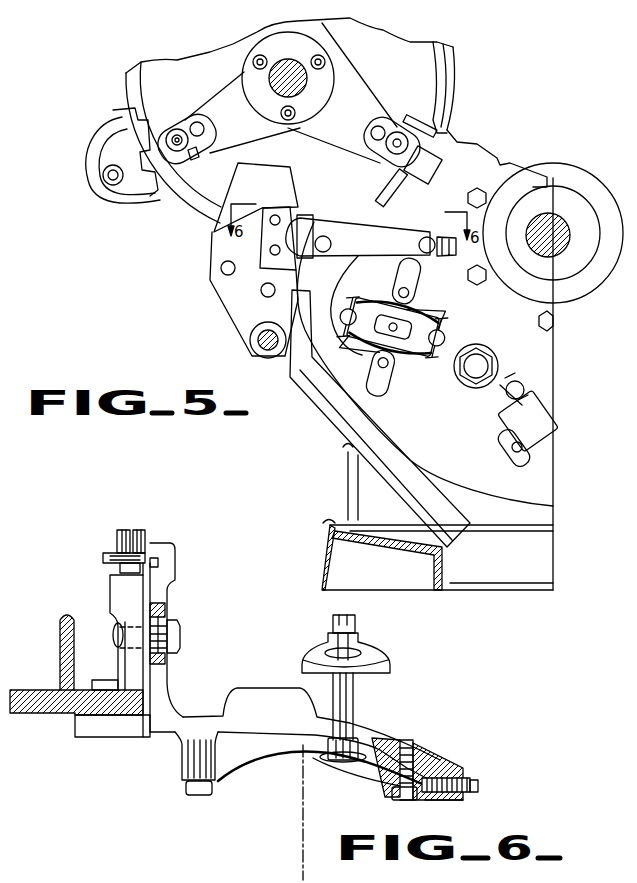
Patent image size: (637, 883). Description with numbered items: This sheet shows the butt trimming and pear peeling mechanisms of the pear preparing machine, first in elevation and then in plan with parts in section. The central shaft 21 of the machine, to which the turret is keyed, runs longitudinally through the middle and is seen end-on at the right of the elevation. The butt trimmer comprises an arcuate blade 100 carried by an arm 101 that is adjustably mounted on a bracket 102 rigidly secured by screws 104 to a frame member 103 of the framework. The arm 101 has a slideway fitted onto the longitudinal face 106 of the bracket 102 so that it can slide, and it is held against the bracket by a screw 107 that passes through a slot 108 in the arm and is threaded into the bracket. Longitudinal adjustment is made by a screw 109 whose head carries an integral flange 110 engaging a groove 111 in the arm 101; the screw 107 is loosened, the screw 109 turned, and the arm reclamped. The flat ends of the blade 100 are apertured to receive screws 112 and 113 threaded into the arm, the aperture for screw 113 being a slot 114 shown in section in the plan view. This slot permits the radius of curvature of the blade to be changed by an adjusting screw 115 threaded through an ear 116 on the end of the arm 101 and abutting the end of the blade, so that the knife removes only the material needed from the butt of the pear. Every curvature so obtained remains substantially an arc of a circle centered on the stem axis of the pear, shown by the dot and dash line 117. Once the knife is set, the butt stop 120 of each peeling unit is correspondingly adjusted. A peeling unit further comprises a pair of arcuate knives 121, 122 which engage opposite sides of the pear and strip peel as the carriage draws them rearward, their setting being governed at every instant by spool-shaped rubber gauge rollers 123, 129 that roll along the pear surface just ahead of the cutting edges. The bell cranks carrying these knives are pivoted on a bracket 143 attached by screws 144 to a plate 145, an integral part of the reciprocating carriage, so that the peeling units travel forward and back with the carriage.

In FIG. 5, the shaft 21 is at (558, 237).
In FIG. 5, the blade 100 is at (420, 236).
In FIG. 6, the blade 100 is at (258, 765).
In FIG. 5, the arm 101 is at (333, 228).
In FIG. 6, the arm 101 is at (177, 716).
In FIG. 5, the bracket 102 is at (296, 243).
In FIG. 6, the bracket 102 is at (100, 730).
In FIG. 5, the frame member 103 is at (276, 192).
In FIG. 6, the frame member 103 is at (60, 672).
In FIG. 6, the screws 104 is at (108, 680).
In FIG. 6, the longitudinal face 106 is at (140, 594).
In FIG. 6, the screw 107 is at (180, 641).
In FIG. 6, the slot 108 is at (162, 622).
In FIG. 6, the screw 109 is at (140, 530).
In FIG. 6, the flange 110 is at (105, 558).
In FIG. 6, the groove 111 is at (165, 562).
In FIG. 6, the screw 112 is at (197, 796).
In FIG. 6, the screw 113 is at (405, 801).
In FIG. 6, the slot 114 is at (415, 758).
In FIG. 6, the adjusting screw 115 is at (472, 782).
In FIG. 6, the ear 116 is at (458, 801).
In FIG. 6, the stem axis 117 is at (301, 836).
In FIG. 5, the butt stop 120 is at (440, 307).
In FIG. 6, the butt stop 120 is at (367, 773).
In FIG. 5, the arcuate knife 121 is at (361, 352).
In FIG. 5, the arcuate knife 122 is at (430, 300).
In FIG. 5, the gauge roller 123 is at (402, 285).
In FIG. 5, the gauge roller 129 is at (374, 378).
In FIG. 5, the bracket 143 is at (447, 333).
In FIG. 5, the screws 144 is at (350, 305).
In FIG. 5, the plate 145 is at (451, 413).